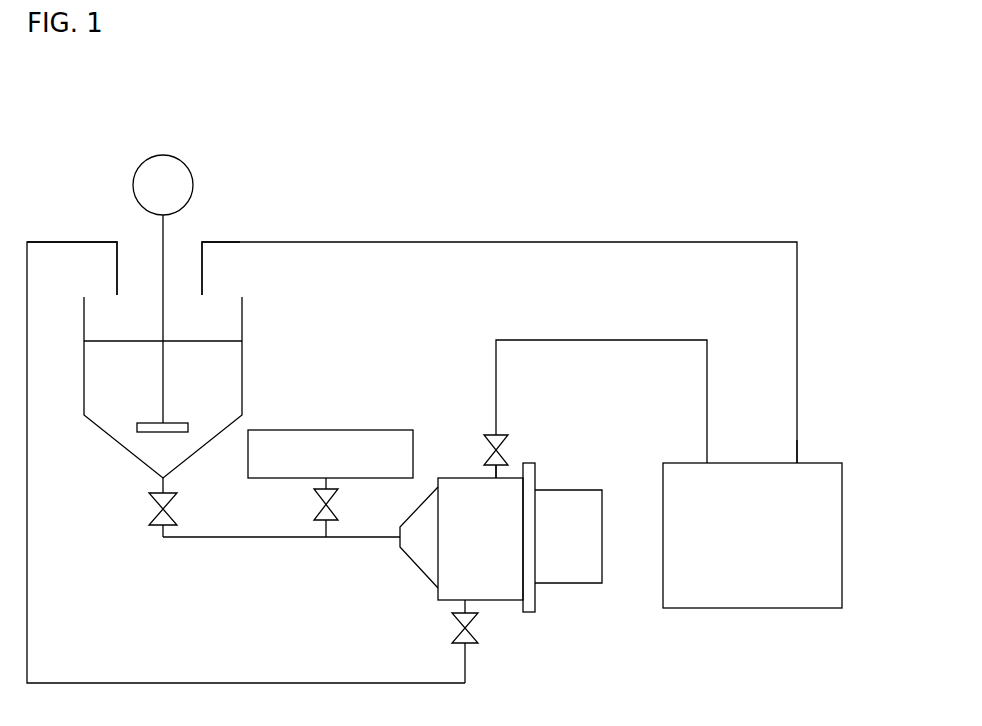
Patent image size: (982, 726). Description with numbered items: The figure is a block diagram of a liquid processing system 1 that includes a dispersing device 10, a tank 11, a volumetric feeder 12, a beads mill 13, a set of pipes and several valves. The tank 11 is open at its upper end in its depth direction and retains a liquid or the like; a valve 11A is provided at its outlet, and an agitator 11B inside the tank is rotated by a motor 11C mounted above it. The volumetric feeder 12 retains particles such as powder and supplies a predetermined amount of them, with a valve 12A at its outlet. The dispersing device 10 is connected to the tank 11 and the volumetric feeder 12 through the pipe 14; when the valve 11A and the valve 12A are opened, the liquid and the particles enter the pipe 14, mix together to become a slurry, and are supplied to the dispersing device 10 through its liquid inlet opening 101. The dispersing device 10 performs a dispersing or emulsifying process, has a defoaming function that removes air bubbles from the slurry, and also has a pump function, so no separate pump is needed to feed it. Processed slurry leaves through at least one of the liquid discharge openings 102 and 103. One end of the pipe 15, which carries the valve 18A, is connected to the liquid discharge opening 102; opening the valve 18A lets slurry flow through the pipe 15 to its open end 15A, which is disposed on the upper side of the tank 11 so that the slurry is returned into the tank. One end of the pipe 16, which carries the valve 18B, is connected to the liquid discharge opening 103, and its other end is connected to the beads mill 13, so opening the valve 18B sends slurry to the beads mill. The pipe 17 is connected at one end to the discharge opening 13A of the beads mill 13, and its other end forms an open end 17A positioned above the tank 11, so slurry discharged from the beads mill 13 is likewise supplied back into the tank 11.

The liquid processing system 1 is at (669, 116).
The dispersing device 10 is at (520, 568).
The tank 11 is at (192, 387).
The valve 11A is at (134, 512).
The agitator 11B is at (113, 323).
The motor 11C is at (203, 176).
The volumetric feeder 12 is at (330, 433).
The valve 12A is at (294, 507).
The beads mill 13 is at (782, 529).
The discharge opening 13A is at (835, 443).
The pipe 14 is at (281, 564).
The pipe 15 is at (246, 462).
The open end 15A is at (72, 268).
The pipe 16 is at (601, 374).
The pipe 17 is at (499, 325).
The open end 17A is at (242, 268).
The valve 18A is at (486, 648).
The valve 18B is at (469, 444).
The liquid inlet opening 101 is at (400, 546).
The liquid discharge opening 102 is at (426, 622).
The liquid discharge opening 103 is at (539, 457).